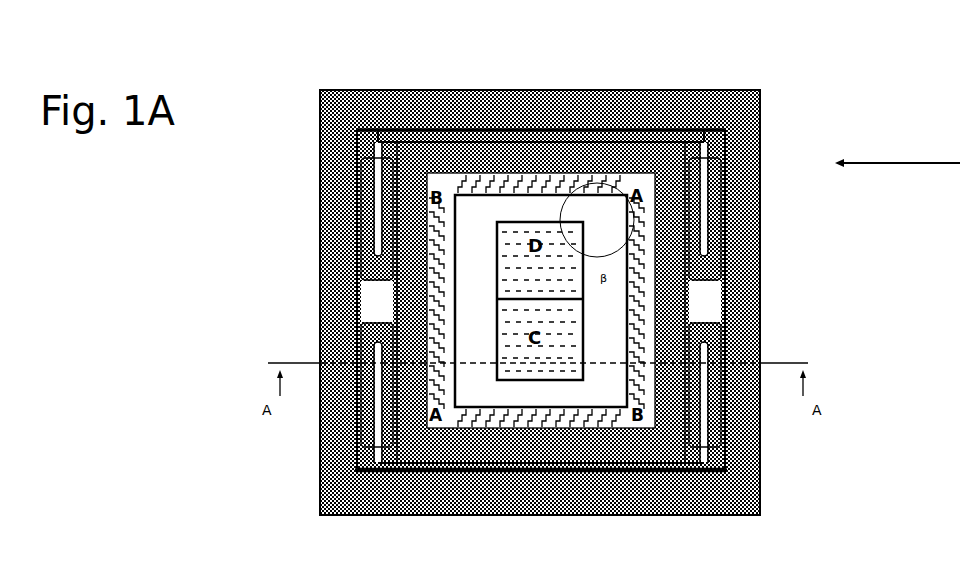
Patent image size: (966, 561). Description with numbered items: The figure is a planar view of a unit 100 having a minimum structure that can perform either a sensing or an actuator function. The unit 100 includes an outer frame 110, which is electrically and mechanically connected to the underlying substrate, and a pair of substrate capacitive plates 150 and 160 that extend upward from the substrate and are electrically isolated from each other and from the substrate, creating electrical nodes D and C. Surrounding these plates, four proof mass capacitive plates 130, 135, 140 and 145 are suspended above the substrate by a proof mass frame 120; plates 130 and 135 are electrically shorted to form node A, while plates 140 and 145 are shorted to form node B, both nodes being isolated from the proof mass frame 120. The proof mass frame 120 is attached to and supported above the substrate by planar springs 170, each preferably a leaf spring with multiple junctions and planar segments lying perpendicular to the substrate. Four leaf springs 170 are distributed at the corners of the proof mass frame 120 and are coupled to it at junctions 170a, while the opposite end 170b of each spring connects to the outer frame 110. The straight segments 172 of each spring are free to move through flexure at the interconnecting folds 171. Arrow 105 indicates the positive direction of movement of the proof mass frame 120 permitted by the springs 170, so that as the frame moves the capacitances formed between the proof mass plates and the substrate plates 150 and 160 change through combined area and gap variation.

The unit 100 is at (242, 362).
The arrow 105 is at (931, 146).
The frame 110 is at (308, 455).
The proof mass frame 120 is at (407, 458).
The capacitive plate 130 is at (613, 183).
The capacitive plate 135 is at (500, 422).
The capacitive plate 140 is at (485, 183).
The capacitive plate 145 is at (595, 422).
The capacitive plate 150 is at (503, 257).
The capacitive plate 160 is at (574, 313).
The planar spring 170 is at (708, 560).
The junction 170a is at (382, 140).
The opposite end 170b is at (358, 140).
The interconnecting fold 171 is at (418, 255).
The straight segment 172 is at (408, 192).